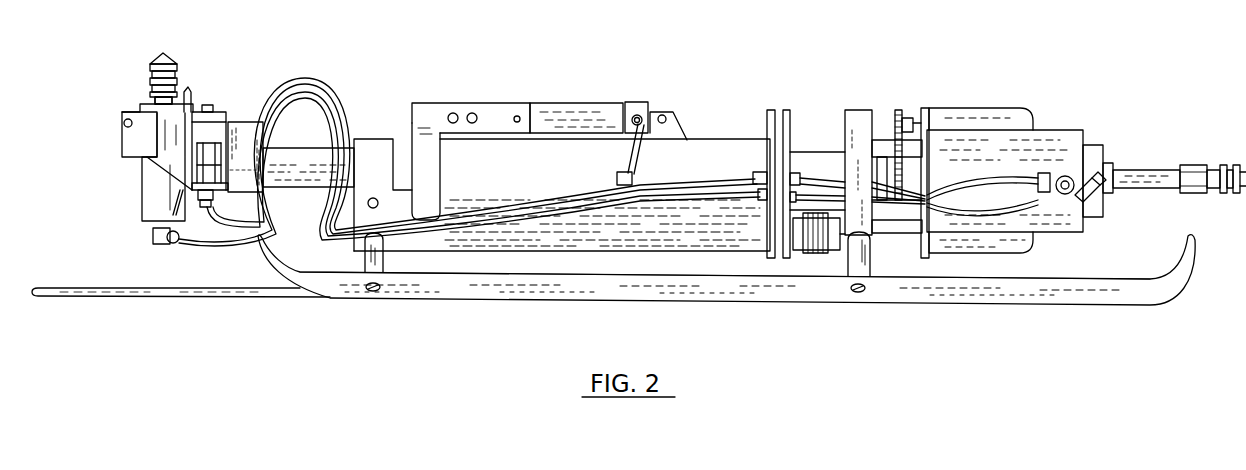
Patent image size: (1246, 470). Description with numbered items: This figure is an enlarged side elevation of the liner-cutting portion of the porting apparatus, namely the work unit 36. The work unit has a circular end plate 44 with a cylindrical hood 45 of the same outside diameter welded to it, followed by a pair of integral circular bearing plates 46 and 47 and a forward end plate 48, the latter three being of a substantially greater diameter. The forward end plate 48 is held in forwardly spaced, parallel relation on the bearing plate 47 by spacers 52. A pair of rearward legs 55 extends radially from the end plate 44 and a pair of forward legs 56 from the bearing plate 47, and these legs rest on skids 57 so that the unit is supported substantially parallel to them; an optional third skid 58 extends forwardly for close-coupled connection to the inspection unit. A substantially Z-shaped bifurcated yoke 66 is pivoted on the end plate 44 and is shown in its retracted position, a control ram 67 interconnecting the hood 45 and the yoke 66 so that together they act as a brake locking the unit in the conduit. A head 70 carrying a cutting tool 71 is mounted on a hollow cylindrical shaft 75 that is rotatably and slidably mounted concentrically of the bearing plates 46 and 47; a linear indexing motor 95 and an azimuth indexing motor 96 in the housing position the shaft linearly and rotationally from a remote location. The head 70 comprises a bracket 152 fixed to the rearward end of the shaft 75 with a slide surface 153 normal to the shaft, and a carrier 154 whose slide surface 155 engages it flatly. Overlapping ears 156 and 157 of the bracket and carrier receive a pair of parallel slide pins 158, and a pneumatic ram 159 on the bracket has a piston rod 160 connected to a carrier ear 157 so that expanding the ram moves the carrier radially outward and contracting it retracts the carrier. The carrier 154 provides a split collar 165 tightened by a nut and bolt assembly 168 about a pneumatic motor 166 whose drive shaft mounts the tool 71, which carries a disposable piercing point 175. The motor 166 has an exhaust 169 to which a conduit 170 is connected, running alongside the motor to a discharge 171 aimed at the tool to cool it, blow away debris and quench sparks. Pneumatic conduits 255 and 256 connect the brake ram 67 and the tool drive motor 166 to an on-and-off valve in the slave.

The work unit 36 is at (703, 118).
The circular end plate 44 is at (368, 145).
The cylindrical hood 45 is at (520, 175).
The rearward bearing plate 46 is at (768, 112).
The forward bearing plate 47 is at (853, 117).
The forward end plate 48 is at (917, 110).
The spacers 52 is at (885, 142).
The rearward legs 55 is at (383, 260).
The forward legs 56 is at (853, 265).
The skids 57 is at (657, 292).
The third skid 58 is at (187, 289).
The bifurcated yoke 66 is at (478, 110).
The control ram 67 is at (593, 112).
The head 70 is at (100, 121).
The cutting tool 71 is at (177, 70).
The hollow cylindrical shaft 75 is at (283, 157).
The linear indexing motor 95 is at (1010, 247).
The azimuth indexing motor 96 is at (1000, 112).
The bracket 152 is at (257, 190).
The slide surface 153 is at (181, 114).
The carrier 154 is at (162, 138).
The slide surface 155 is at (200, 172).
The ears 156 is at (210, 131).
The ears 157 is at (185, 118).
The slide pins 158 is at (193, 162).
The pneumatic ram 159 is at (213, 198).
The piston rod 160 is at (213, 157).
The split collar 165 is at (128, 115).
The pneumatic motor 166 is at (153, 200).
The nut and bolt assembly 168 is at (124, 120).
The exhaust 169 is at (178, 240).
The conduit 170 is at (177, 187).
The discharge 171 is at (194, 89).
The disposable piercing point 175 is at (153, 56).
The pneumatic conduit 255 is at (632, 157).
The pneumatic conduit 256 is at (267, 237).